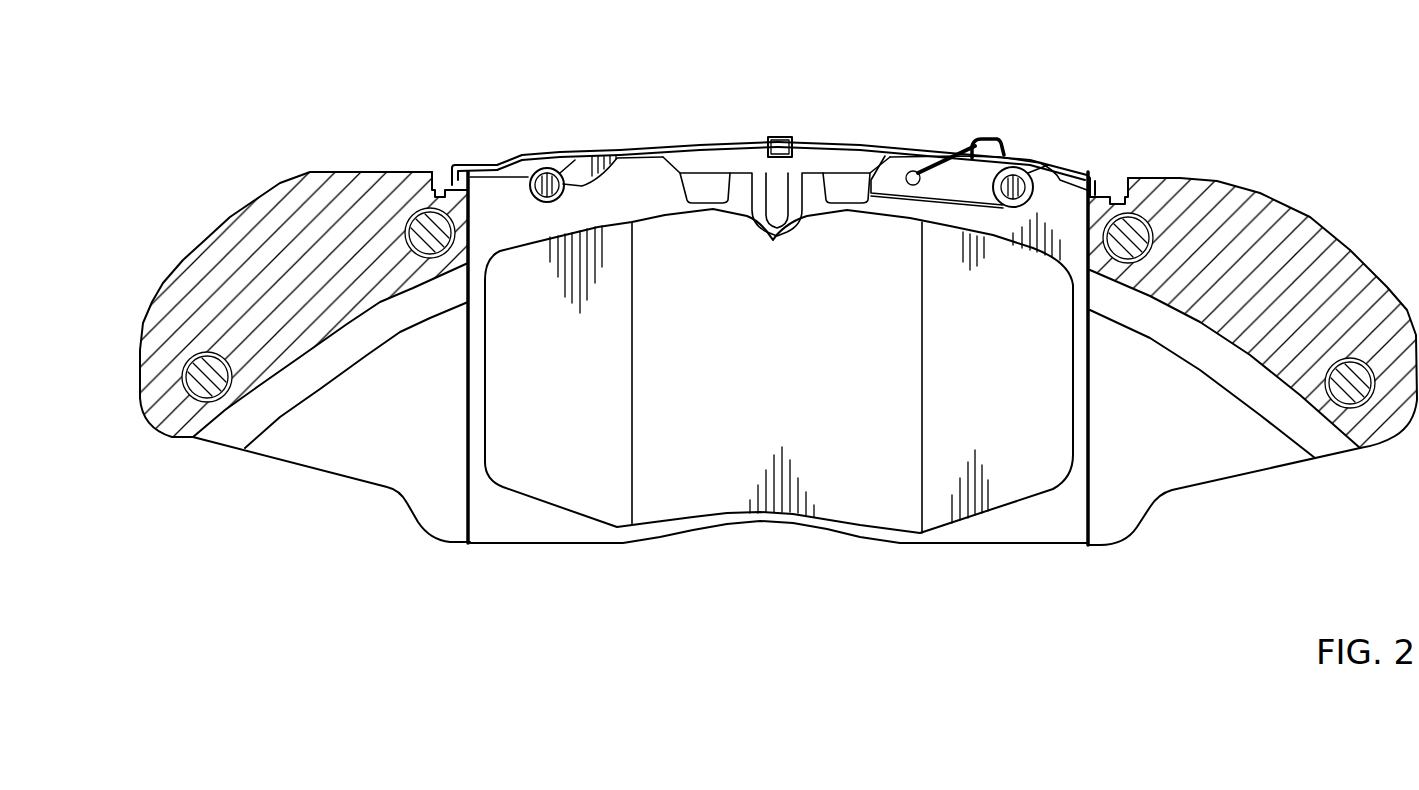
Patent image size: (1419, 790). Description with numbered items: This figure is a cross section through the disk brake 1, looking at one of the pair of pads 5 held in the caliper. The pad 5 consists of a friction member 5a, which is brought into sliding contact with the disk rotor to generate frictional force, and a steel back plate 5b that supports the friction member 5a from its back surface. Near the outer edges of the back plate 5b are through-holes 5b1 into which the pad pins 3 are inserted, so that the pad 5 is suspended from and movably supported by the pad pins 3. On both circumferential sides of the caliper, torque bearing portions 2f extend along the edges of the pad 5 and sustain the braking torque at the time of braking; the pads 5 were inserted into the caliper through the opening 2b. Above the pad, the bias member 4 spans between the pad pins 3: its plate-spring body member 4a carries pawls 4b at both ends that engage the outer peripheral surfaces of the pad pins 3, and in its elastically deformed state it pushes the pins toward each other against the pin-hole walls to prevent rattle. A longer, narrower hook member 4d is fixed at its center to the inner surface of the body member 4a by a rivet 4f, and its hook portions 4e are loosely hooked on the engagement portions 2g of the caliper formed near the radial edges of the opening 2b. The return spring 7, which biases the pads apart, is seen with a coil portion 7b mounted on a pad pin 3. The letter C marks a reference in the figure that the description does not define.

The disk brake 1 is at (233, 160).
The carrier C is at (307, 170).
The opening 2b is at (488, 228).
The torque bearing portion 2f is at (463, 415).
The engagement portion 2g is at (420, 170).
The pad pin 3 is at (600, 190).
The bias member 4 is at (742, 133).
The body member 4a is at (612, 160).
The pawl 4b is at (538, 170).
The hook member 4d is at (527, 170).
The hook portion 4e is at (443, 170).
The rivet 4f is at (780, 140).
The pad 5 is at (583, 630).
The friction member 5a is at (567, 490).
The back plate 5b is at (510, 527).
The through-hole 5b1 is at (560, 180).
The return spring 7 is at (955, 143).
The coil portion 7b is at (1007, 150).